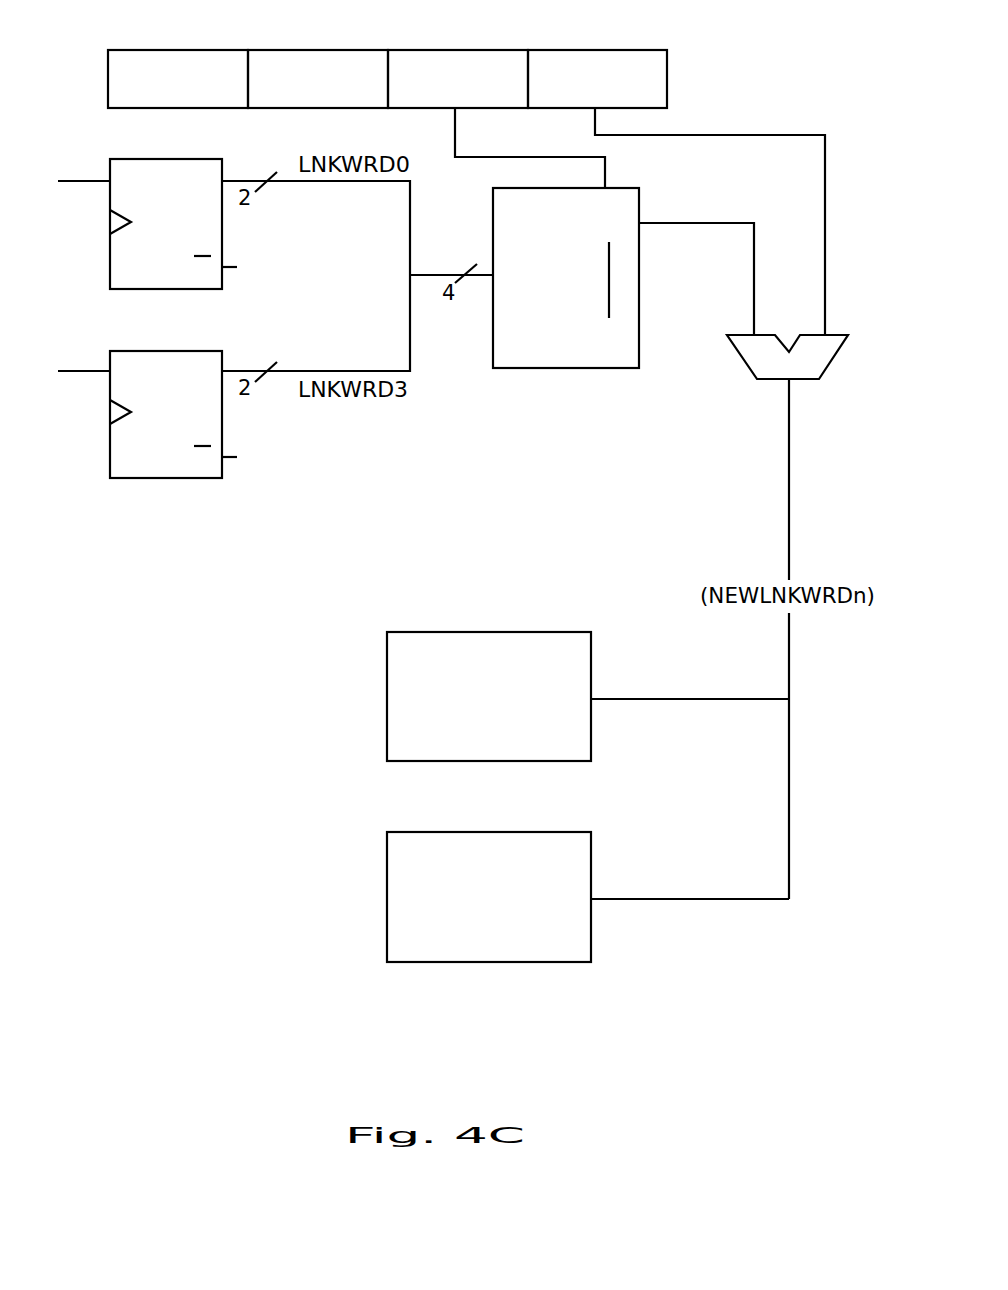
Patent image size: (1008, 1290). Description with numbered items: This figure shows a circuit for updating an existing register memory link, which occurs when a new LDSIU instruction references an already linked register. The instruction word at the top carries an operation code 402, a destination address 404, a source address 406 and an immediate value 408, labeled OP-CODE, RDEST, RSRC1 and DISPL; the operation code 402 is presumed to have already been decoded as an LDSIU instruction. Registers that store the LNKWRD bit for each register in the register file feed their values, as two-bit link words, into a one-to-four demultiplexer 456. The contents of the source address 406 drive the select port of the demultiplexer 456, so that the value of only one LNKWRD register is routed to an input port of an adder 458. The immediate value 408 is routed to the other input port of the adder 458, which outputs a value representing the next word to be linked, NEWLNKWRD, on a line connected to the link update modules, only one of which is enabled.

The operation code 402 is at (177, 50).
The destination address 404 is at (316, 50).
The source address 406 is at (455, 50).
The immediate value 408 is at (583, 50).
The demultiplexer 456 is at (639, 353).
The adder 458 is at (833, 365).